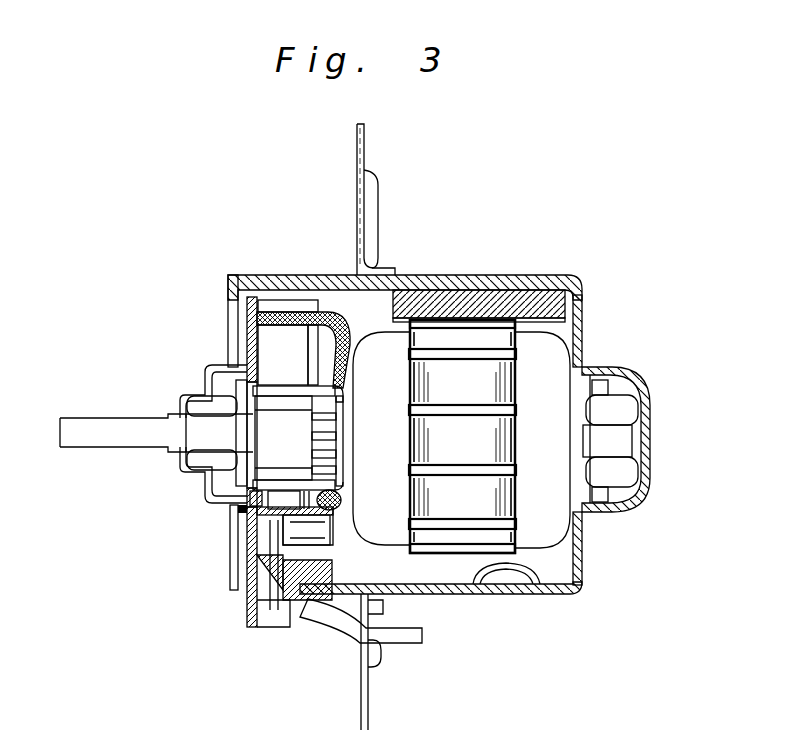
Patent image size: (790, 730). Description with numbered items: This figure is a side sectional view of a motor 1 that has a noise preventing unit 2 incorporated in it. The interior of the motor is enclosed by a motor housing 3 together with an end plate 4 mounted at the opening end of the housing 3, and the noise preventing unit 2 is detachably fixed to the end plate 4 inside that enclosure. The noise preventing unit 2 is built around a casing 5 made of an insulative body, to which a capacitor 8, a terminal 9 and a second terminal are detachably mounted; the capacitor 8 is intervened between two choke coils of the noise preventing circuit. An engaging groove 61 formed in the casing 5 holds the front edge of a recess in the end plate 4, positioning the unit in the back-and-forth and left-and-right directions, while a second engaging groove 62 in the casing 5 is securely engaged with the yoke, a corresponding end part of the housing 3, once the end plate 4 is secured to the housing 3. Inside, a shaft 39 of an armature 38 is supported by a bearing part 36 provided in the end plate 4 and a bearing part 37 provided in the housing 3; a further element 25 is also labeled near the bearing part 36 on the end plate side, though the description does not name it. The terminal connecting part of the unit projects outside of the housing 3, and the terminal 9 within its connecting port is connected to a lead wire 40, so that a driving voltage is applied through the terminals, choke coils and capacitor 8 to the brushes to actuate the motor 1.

The motor 1 is at (606, 292).
The noise preventing unit 2 is at (225, 614).
The motor housing 3 is at (503, 278).
The end plate 4 is at (205, 494).
The casing 5 is at (247, 622).
The capacitor 8 is at (322, 524).
The terminal 9 is at (247, 594).
The bearing holder 25 is at (213, 367).
The bearing part 36 is at (198, 408).
The bearing part 37 is at (614, 410).
The armature 38 is at (450, 558).
The shaft 39 is at (632, 450).
The lead wire 40 is at (410, 645).
The engaging groove 61 is at (235, 520).
The engaging groove 62 is at (308, 602).